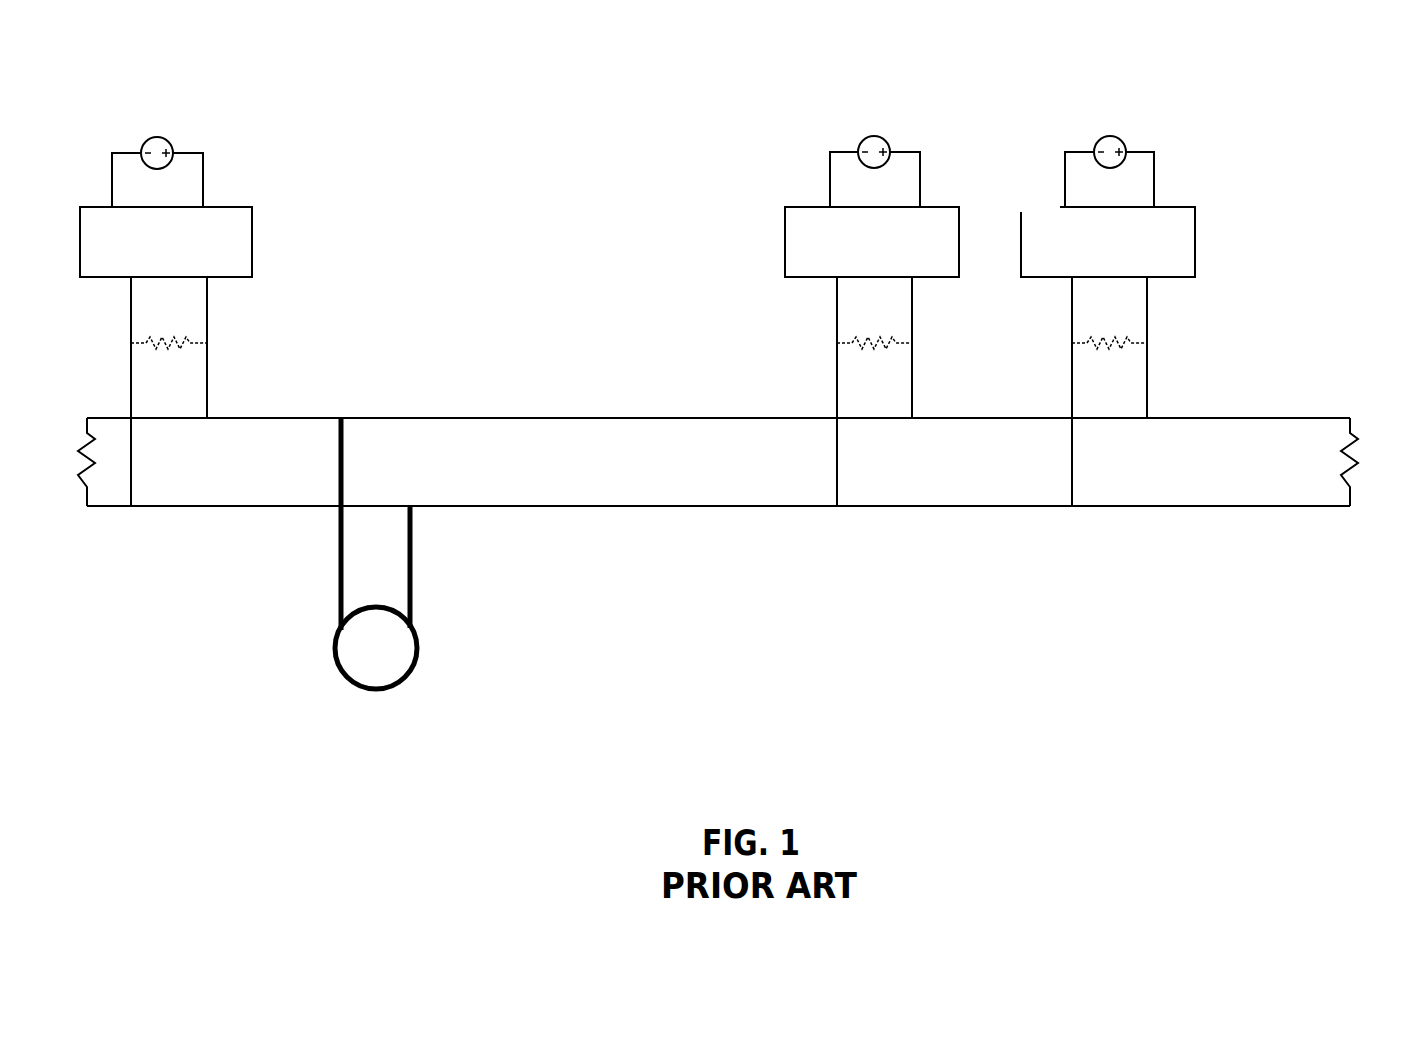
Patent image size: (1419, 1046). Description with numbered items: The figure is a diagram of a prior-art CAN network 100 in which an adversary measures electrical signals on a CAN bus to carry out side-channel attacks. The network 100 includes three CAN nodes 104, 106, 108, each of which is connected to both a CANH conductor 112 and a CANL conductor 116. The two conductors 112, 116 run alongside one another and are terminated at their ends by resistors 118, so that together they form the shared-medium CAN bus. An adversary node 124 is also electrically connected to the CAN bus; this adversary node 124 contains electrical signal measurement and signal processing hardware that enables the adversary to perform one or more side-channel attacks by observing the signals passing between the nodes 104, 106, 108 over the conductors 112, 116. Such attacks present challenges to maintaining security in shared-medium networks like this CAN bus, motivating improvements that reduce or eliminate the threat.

The CAN network 100 is at (188, 71).
The CAN node 104 is at (245, 206).
The CAN node 106 is at (937, 201).
The CAN node 108 is at (1182, 204).
The CANH conductor 112 is at (642, 417).
The CANL conductor 116 is at (640, 506).
The resistors 118 is at (90, 443).
The adversary node 124 is at (391, 688).